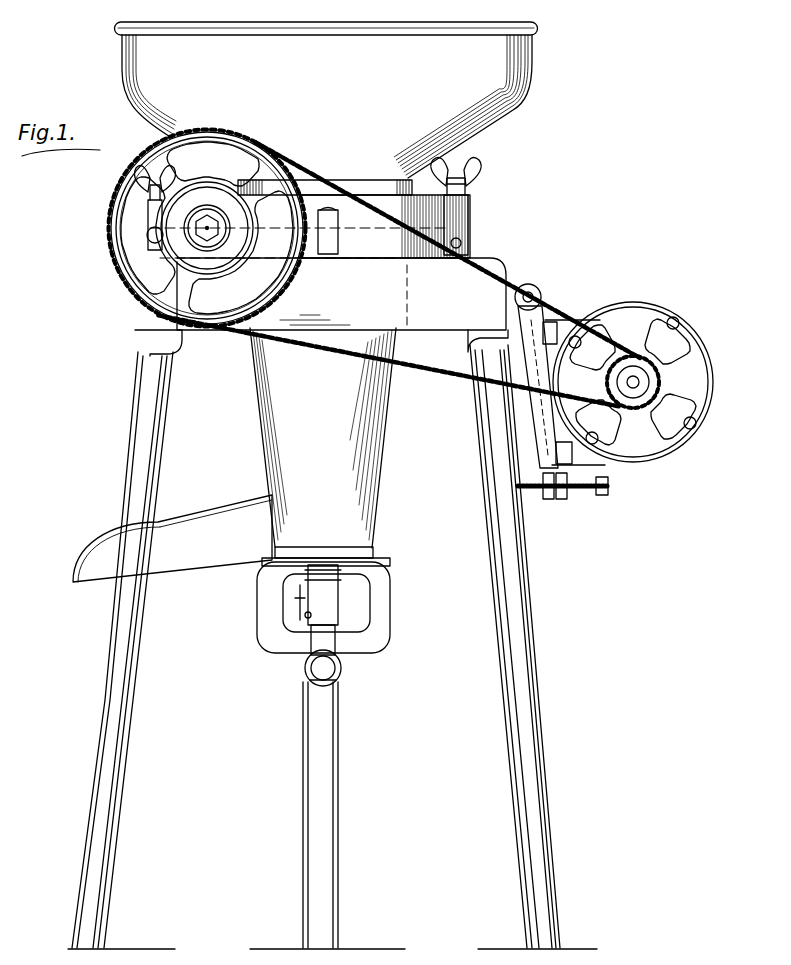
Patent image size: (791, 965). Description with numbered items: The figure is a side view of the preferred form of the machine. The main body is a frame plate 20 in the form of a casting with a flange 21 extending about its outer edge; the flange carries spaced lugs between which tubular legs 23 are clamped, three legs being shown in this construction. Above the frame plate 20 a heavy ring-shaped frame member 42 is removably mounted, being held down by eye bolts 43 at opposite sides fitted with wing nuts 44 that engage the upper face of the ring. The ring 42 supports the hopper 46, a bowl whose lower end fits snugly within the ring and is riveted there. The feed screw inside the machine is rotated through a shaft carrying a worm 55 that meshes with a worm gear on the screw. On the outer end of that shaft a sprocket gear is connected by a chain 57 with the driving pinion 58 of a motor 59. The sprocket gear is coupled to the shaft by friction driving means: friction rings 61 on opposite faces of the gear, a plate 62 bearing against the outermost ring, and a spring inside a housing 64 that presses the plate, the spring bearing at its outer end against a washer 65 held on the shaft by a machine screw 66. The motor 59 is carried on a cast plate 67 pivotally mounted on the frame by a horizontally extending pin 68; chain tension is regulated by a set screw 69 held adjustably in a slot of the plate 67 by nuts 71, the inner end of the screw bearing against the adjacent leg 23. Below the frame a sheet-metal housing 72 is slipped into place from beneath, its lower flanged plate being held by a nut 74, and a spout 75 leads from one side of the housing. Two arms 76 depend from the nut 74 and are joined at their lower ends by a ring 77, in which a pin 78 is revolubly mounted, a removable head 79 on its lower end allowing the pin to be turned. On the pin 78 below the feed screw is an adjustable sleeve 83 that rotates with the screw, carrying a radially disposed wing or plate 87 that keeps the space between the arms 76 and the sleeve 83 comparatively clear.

The frame plate 20 is at (490, 262).
The flange 21 is at (430, 335).
The tubular legs 23 is at (130, 460).
The frame member ring 42 is at (378, 183).
The eye bolts 43 is at (460, 178).
The wing nuts 44 is at (478, 178).
The hopper 46 is at (500, 127).
The worm 55 is at (338, 240).
The chain 57 is at (135, 292).
The driving pinion 58 is at (655, 357).
The motor 59 is at (712, 365).
The friction rings 61 is at (215, 185).
The plate 62 is at (222, 200).
The housing 64 is at (228, 215).
The washer 65 is at (240, 225).
The machine screw 66 is at (160, 310).
The plate 67 is at (545, 435).
The pin 68 is at (535, 290).
The set screw 69 is at (590, 490).
The nuts 71 is at (550, 500).
The housing 72 is at (266, 478).
The nut 74 is at (380, 560).
The spout 75 is at (185, 575).
The arms 76 is at (390, 610).
The ring 77 is at (320, 638).
The pin 78 is at (322, 668).
The removable head 79 is at (342, 672).
The sleeve 83 is at (338, 595).
The wing or plate 87 is at (285, 612).